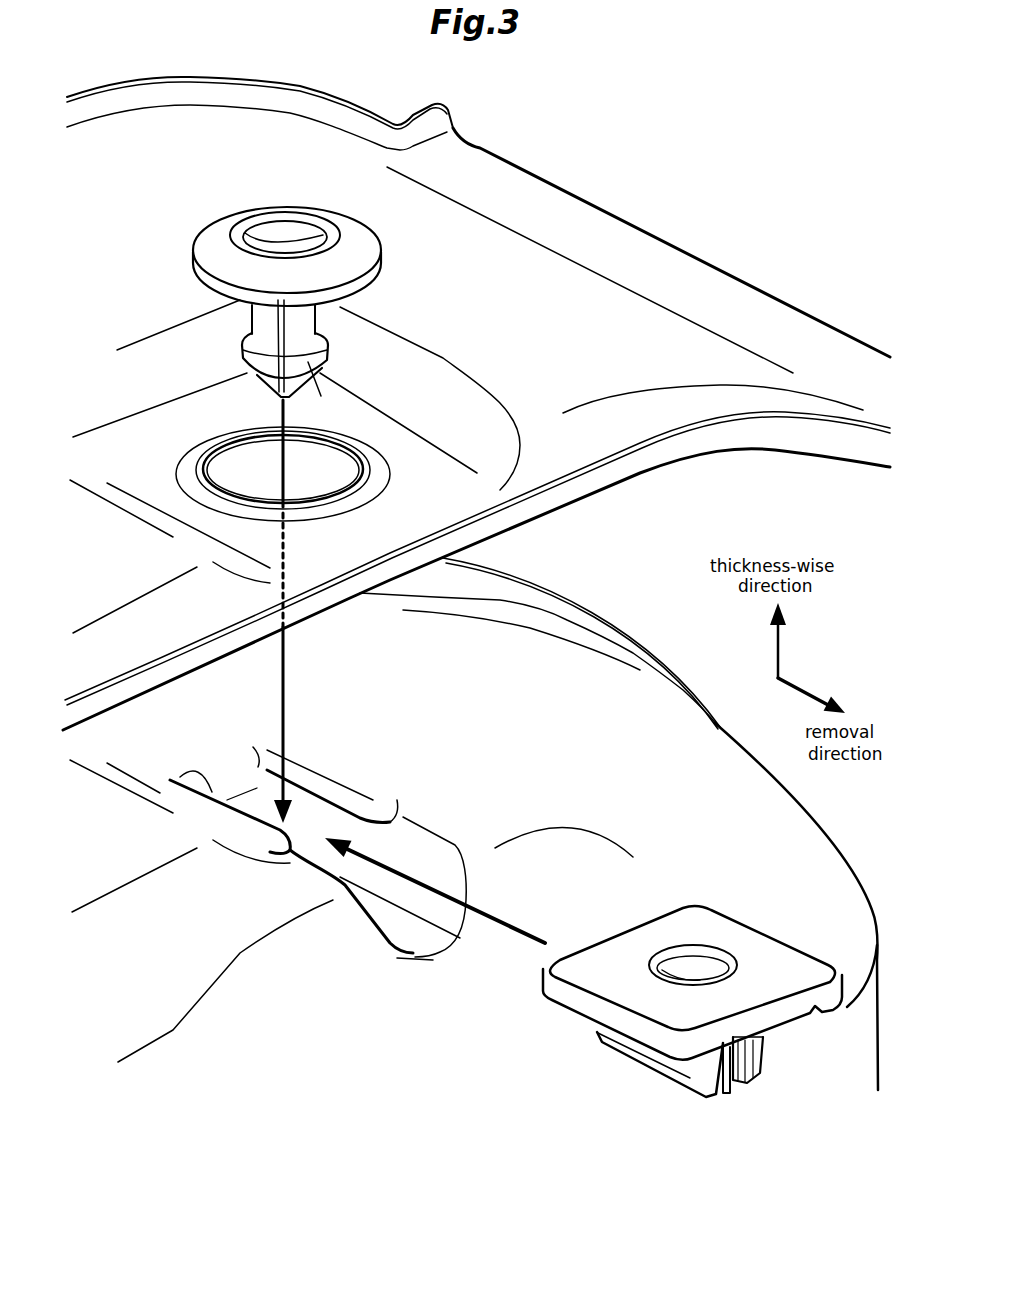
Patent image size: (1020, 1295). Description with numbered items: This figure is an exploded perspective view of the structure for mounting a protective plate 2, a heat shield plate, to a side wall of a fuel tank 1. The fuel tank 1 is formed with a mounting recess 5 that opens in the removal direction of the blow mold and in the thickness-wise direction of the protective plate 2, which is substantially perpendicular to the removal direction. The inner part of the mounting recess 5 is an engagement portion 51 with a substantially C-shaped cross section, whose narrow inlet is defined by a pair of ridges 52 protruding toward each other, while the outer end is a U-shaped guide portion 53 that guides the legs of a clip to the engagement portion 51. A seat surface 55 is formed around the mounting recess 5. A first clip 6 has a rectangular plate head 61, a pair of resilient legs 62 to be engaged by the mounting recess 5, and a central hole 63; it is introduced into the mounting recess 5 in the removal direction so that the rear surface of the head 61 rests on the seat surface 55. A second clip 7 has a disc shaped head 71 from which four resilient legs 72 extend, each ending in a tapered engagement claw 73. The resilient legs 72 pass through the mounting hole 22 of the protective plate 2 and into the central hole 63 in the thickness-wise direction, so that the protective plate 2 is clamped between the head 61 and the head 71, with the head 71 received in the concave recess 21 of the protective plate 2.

The fuel tank 1 is at (634, 613).
The protective plate 2 is at (697, 256).
The mounting recess 5 is at (300, 832).
The first clip 6 is at (692, 1007).
The second clip 7 is at (263, 291).
The recess 21 is at (100, 388).
The mounting hole 22 is at (210, 465).
The engagement portion 51 is at (312, 818).
The ridges 52 is at (257, 780).
The guide portion 53 is at (412, 858).
The seat surface 55 is at (372, 767).
The head 61 is at (633, 917).
The resilient legs 62 is at (752, 1080).
The central hole 63 is at (707, 972).
The head 71 is at (208, 231).
The resilient legs 72 is at (280, 328).
The engagement claw 73 is at (319, 382).